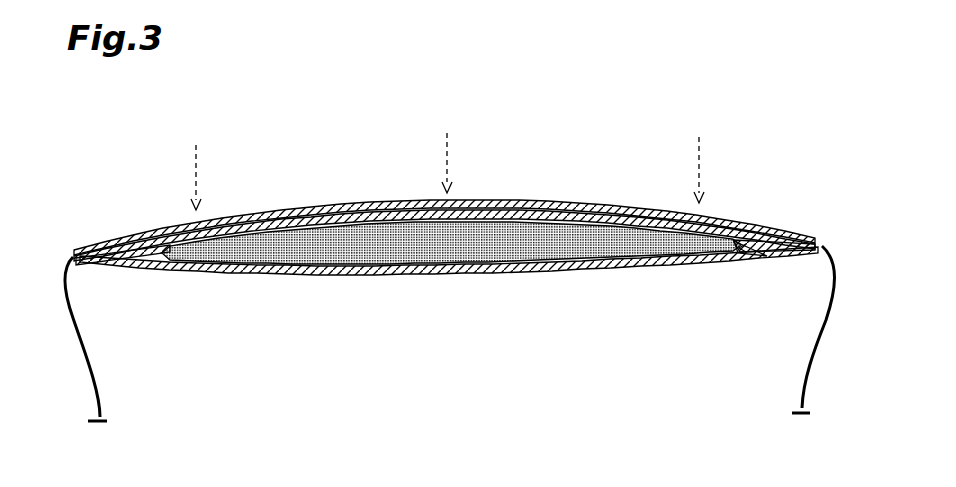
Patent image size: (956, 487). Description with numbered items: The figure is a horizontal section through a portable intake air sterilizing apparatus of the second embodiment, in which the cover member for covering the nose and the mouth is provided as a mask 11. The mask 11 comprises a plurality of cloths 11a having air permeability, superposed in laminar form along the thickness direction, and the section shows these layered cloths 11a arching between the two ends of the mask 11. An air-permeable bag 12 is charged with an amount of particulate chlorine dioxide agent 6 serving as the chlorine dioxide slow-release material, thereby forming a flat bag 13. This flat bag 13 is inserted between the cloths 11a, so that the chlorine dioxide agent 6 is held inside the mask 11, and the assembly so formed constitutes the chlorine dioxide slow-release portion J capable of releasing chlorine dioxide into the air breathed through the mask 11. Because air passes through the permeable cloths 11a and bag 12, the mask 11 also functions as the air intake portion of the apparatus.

The mask 11 is at (651, 268).
The cloth 11a is at (310, 217).
The air-permeable bag 12 is at (160, 252).
The particulate chlorine dioxide agent 6 is at (207, 252).
The flat bag 13 is at (248, 340).
The chlorine dioxide slow-release portion J is at (748, 254).